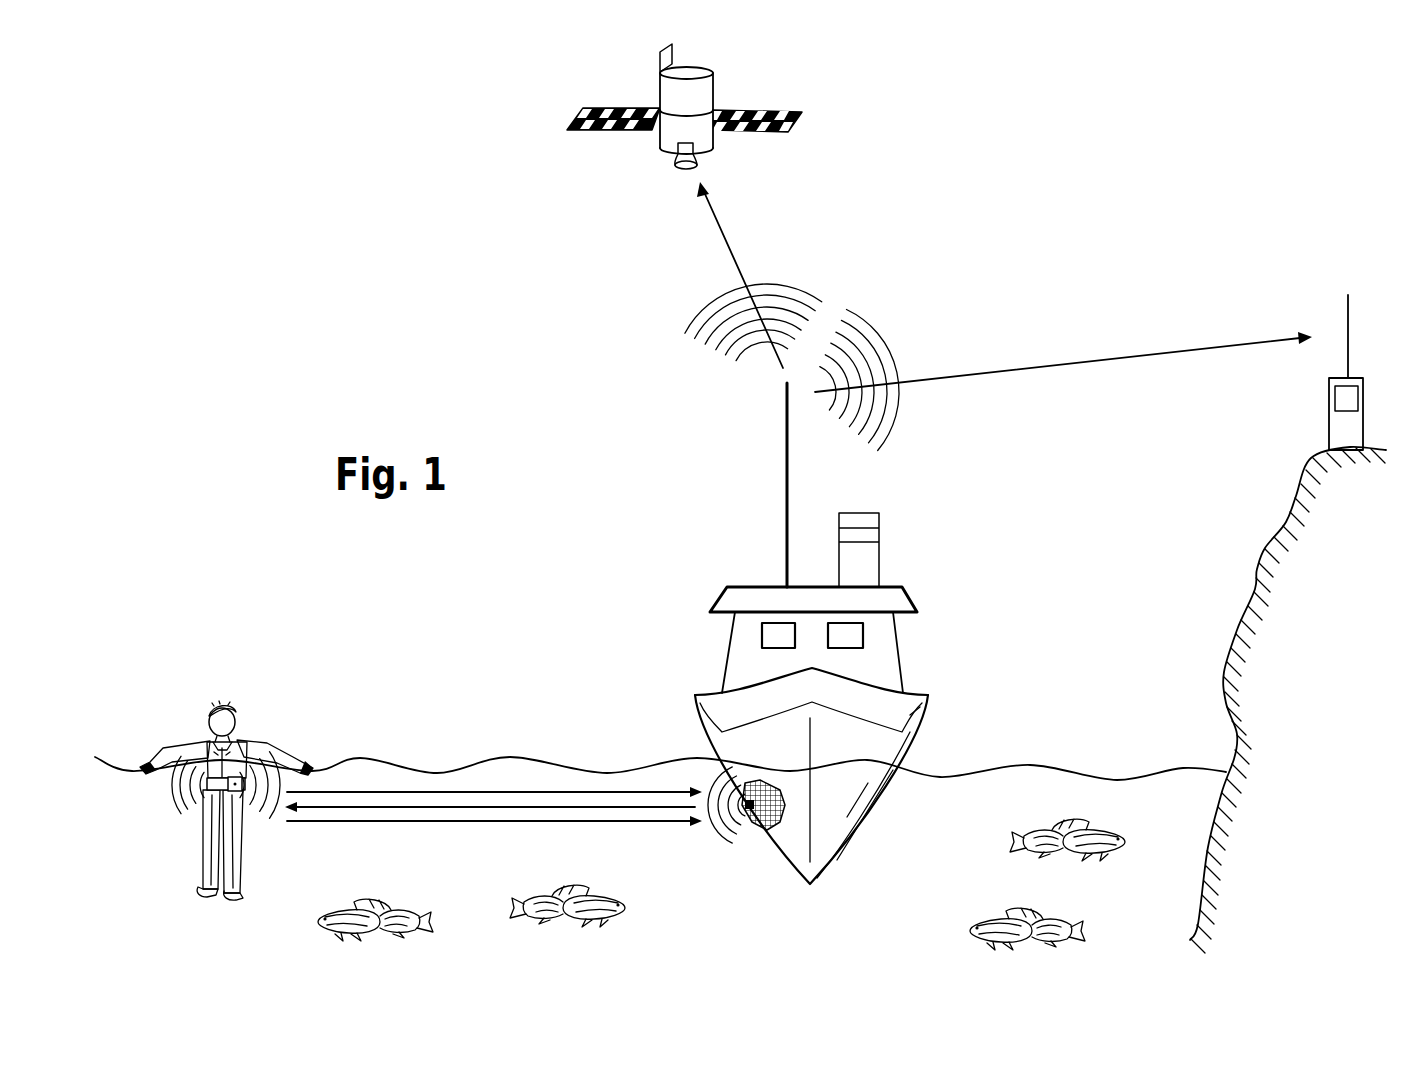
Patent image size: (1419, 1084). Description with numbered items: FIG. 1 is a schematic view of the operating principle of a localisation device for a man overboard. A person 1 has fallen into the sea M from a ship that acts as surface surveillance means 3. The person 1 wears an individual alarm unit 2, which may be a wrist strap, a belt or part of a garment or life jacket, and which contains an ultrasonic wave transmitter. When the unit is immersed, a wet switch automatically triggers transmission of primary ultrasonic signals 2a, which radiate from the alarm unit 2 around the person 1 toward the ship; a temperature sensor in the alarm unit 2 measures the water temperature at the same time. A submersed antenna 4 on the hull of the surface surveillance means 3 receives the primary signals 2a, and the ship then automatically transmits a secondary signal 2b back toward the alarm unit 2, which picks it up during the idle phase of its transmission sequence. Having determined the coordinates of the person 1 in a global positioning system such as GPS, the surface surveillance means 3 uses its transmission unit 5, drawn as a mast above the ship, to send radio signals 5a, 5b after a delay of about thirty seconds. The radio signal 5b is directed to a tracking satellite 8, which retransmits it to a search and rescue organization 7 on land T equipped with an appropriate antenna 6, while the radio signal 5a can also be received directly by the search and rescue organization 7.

The person 1 is at (153, 705).
The individual alarm unit 2 is at (213, 790).
The primary ultrasonic signals 2a is at (178, 786).
The secondary signal 2b is at (718, 828).
The surface surveillance means 3 is at (853, 810).
The antenna 4 is at (763, 830).
The transmission unit 5 is at (786, 463).
The radio signal 5a is at (895, 403).
The radio signal 5b is at (702, 314).
The antenna 6 is at (1355, 318).
The search and rescue organization 7 is at (1305, 375).
The tracking satellite 8 is at (663, 130).
The sea M is at (968, 834).
The land T is at (1312, 694).